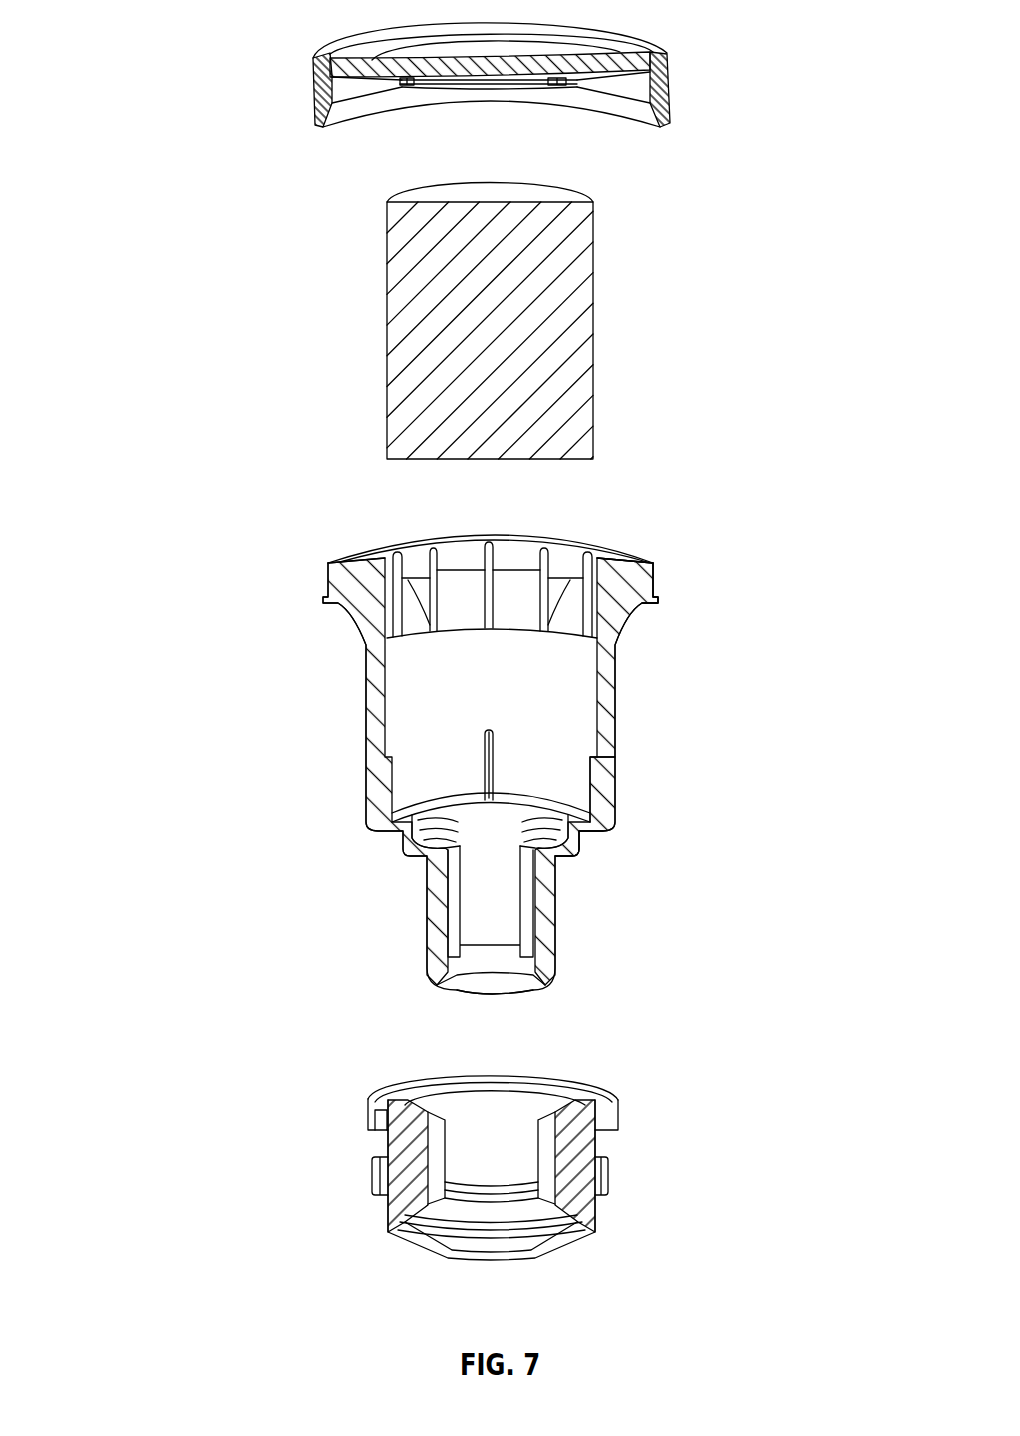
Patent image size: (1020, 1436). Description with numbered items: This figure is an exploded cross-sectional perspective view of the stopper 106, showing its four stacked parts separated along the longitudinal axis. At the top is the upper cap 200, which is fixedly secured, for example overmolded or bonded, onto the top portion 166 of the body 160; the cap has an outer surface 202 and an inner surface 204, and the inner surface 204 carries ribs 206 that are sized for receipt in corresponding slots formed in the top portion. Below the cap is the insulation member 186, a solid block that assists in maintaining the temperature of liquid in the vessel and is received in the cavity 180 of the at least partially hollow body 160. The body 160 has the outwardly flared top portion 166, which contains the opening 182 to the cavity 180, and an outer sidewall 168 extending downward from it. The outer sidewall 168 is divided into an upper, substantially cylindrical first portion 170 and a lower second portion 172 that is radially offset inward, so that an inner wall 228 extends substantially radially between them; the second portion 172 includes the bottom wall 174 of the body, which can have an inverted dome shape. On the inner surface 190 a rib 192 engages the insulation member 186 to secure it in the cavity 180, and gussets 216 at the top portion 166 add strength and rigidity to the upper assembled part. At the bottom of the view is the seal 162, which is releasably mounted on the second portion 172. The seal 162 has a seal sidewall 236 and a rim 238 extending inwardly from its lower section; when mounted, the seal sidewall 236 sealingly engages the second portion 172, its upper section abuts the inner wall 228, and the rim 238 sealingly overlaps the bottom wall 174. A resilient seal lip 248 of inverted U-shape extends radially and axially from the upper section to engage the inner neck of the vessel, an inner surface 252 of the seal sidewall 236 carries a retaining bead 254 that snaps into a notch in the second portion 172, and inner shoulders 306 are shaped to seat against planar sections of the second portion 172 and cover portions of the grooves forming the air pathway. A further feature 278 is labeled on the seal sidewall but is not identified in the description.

The stopper 106 is at (194, 26).
The upper cap 200 is at (672, 70).
The outer surface 202 is at (311, 90).
The inner surface 204 is at (639, 107).
The ribs 206 is at (408, 86).
The insulation member 186 is at (577, 305).
The body 160 is at (367, 681).
The top portion 166 is at (656, 581).
The gussets 216 is at (430, 543).
The opening 182 is at (523, 548).
The outer sidewall 168 is at (367, 758).
The cavity 180 is at (614, 702).
The inner surface 190 is at (591, 743).
The first portion 170 is at (606, 784).
The rib 192 is at (484, 757).
The inner wall 228 is at (591, 833).
The second portion 172 is at (556, 936).
The bottom wall 174 is at (506, 992).
The seal 162 is at (592, 1086).
The inner surface 252 is at (446, 1098).
The seal lip 248 is at (375, 1123).
The side tab 278 is at (371, 1176).
The inner shoulders 306 is at (545, 1173).
The seal sidewall 236 is at (597, 1216).
The rim 238 is at (566, 1249).
The retaining bead 254 is at (502, 1195).